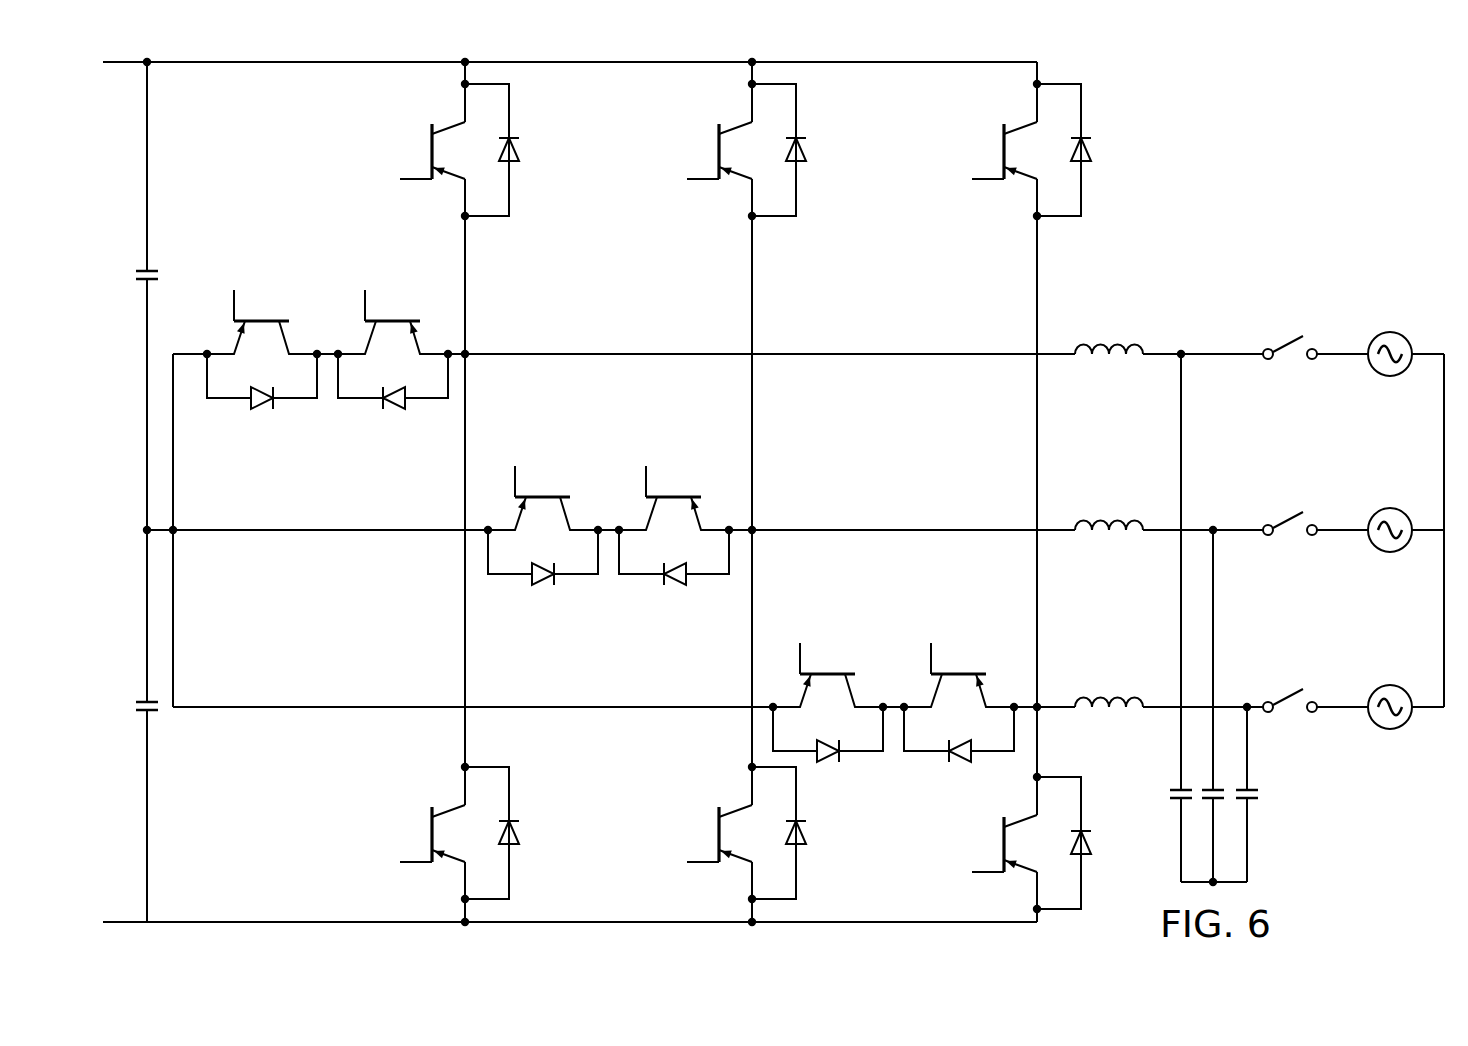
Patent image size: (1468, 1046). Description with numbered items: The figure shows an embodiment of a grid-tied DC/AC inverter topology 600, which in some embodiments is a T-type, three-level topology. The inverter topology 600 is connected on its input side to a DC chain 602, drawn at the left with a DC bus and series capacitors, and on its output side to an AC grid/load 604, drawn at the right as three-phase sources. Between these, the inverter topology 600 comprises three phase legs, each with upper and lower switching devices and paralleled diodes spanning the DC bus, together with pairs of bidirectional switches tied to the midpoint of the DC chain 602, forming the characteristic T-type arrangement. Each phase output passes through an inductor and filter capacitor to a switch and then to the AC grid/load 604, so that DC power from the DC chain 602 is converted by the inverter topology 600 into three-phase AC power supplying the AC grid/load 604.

The DC/AC inverter topology 600 is at (1300, 138).
The DC chain 602 is at (123, 63).
The AC grid/load 604 is at (1397, 272).